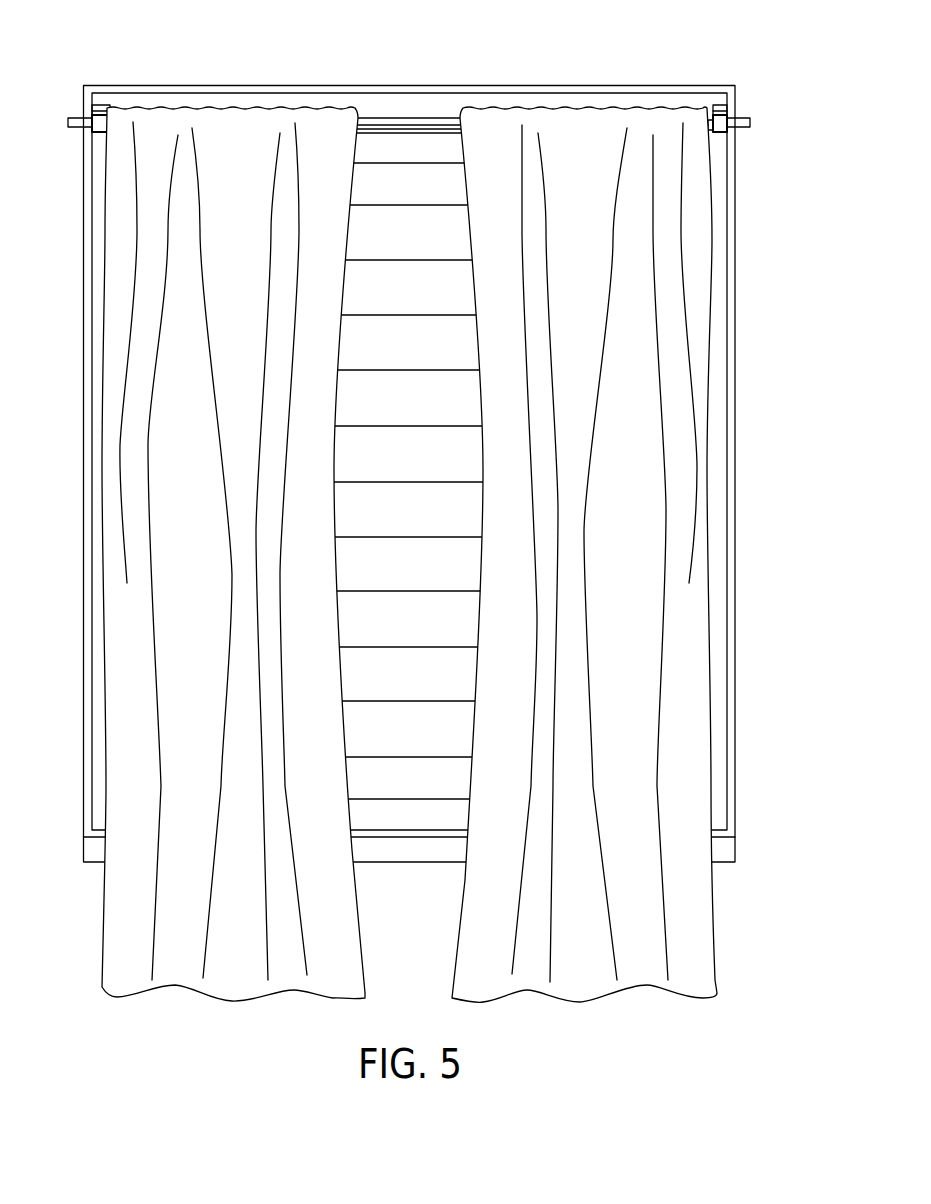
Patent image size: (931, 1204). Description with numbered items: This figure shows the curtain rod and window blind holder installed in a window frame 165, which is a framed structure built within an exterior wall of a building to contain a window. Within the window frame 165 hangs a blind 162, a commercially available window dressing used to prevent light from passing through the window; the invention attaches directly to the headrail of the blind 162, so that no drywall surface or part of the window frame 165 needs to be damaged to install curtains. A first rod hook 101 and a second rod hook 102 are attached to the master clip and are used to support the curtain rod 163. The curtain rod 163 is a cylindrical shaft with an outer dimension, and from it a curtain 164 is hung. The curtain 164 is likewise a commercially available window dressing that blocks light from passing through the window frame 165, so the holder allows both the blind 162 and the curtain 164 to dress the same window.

The first rod hook 101 is at (100, 117).
The second rod hook 102 is at (720, 115).
The blind 162 is at (392, 205).
The curtain rod 163 is at (75, 128).
The curtain 164 is at (695, 220).
The window frame 165 is at (717, 162).